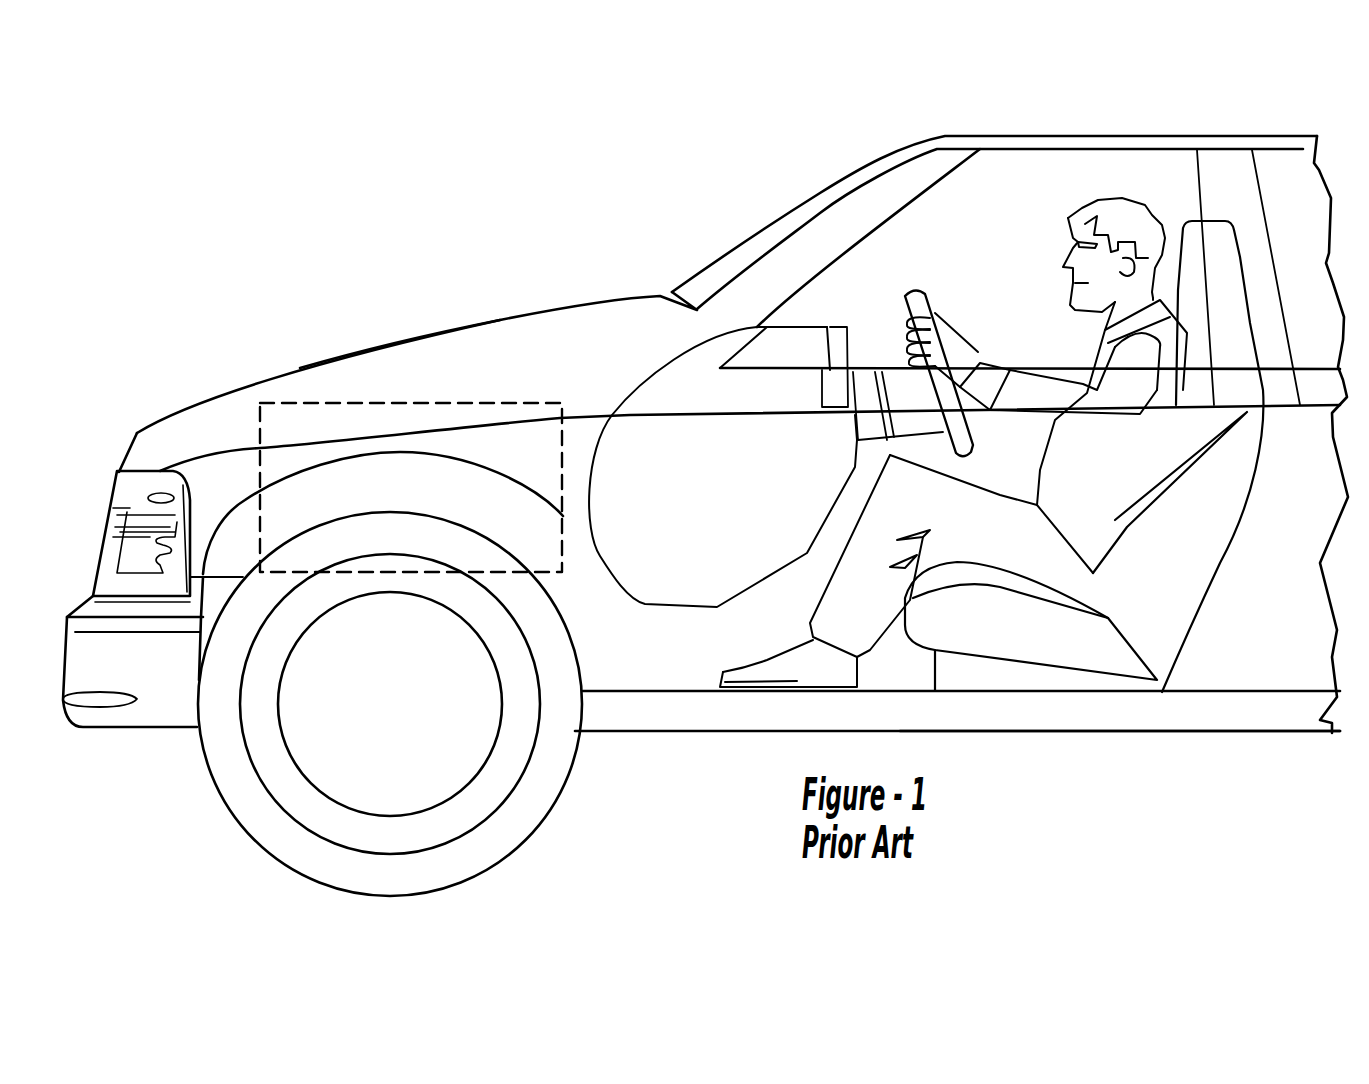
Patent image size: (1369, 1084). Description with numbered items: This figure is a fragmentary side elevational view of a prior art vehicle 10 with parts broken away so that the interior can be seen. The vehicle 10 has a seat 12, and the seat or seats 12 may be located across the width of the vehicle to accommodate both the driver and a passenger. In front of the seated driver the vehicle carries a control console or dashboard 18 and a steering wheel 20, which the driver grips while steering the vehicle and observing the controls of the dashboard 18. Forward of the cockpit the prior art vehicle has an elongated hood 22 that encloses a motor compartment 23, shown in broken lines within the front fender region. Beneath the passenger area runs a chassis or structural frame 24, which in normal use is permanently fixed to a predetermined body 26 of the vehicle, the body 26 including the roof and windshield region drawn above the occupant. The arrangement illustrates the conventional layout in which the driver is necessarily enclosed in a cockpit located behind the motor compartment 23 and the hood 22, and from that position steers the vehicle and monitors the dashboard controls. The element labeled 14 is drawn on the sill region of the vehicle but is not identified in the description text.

The vehicle 10 is at (553, 297).
The seat 12 is at (1240, 341).
The floor pan 14 is at (665, 691).
The control console or dashboard 18 is at (825, 327).
The steering wheel 20 is at (918, 306).
The hood 22 is at (350, 385).
The motor compartment 23 is at (258, 427).
The chassis or structural frame 24 is at (1162, 705).
The body 26 is at (953, 160).